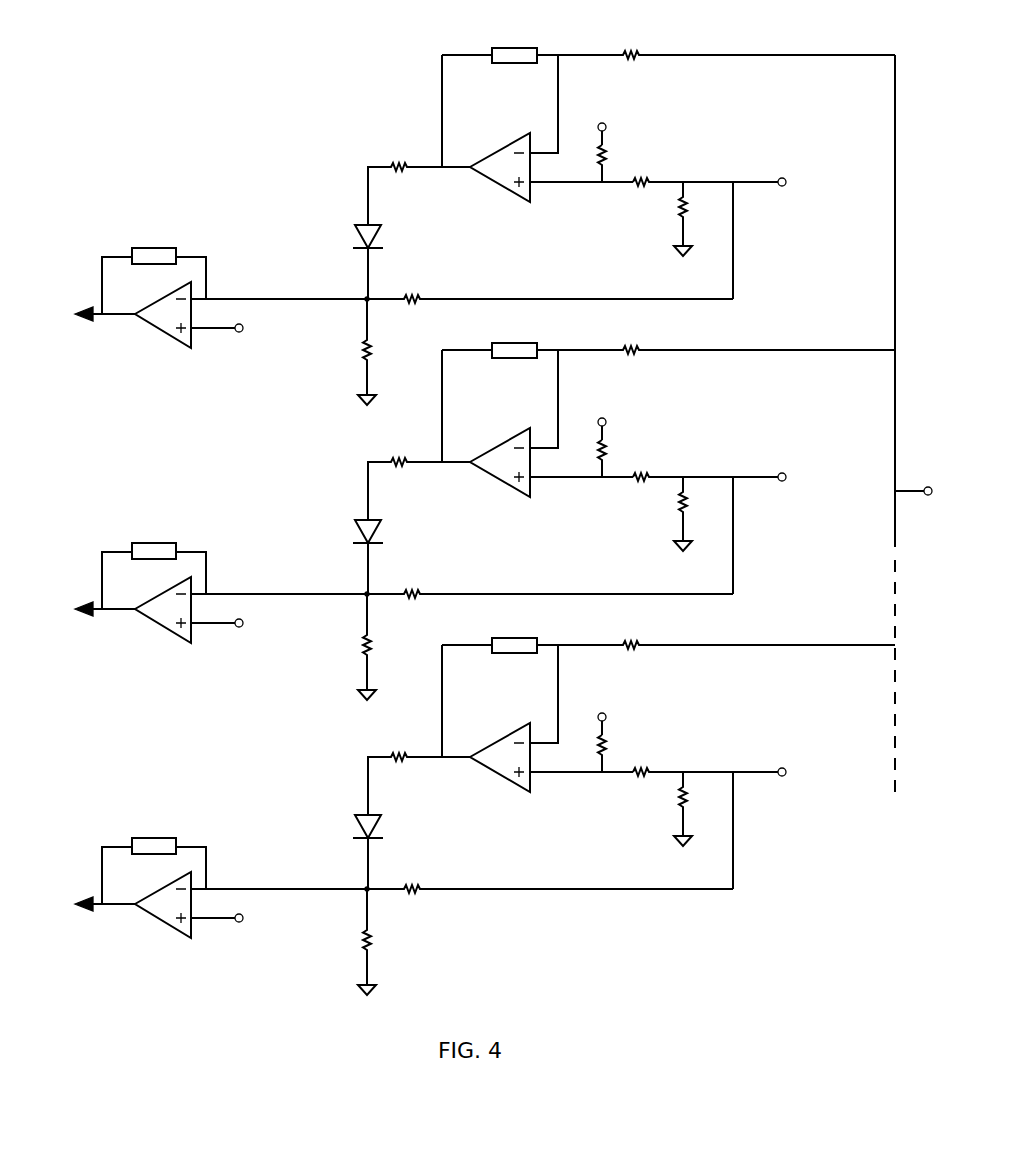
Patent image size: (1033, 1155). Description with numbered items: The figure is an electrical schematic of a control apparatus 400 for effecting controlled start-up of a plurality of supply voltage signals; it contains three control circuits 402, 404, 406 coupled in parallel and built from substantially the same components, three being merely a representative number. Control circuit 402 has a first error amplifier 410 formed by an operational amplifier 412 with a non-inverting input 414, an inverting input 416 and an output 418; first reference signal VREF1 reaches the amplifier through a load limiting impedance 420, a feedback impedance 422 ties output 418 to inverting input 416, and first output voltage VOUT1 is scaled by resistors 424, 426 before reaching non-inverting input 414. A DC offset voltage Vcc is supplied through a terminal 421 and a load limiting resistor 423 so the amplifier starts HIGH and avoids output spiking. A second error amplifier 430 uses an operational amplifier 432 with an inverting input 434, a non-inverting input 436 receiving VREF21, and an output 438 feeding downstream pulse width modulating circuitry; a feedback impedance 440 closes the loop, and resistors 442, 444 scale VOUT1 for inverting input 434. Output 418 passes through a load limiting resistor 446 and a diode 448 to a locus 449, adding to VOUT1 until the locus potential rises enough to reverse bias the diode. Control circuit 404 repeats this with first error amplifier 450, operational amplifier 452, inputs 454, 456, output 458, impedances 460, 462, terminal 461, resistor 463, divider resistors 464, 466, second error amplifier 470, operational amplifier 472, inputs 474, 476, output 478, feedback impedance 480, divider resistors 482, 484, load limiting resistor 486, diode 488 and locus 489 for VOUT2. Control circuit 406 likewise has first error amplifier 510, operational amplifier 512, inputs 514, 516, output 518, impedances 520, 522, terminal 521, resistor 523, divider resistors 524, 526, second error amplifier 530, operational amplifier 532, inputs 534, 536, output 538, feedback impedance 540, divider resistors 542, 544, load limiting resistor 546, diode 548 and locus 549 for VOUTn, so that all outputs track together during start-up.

The control apparatus 400 is at (728, 962).
The control circuit 402 is at (188, 130).
The control circuit 404 is at (182, 447).
The control circuit 406 is at (149, 746).
The first error amplifier 410 is at (415, 135).
The operational amplifier 412 is at (505, 190).
The non-inverting input 414 is at (535, 186).
The inverting input 416 is at (552, 150).
The output 418 is at (470, 162).
The load limiting impedance 420 is at (642, 50).
The terminal 421 is at (608, 127).
The feedback impedance 422 is at (515, 48).
The load limiting resistor 423 is at (610, 160).
The resistor 424 is at (657, 178).
The resistor 426 is at (678, 217).
The second error amplifier 430 is at (230, 268).
The operational amplifier 432 is at (150, 330).
The inverting input 434 is at (215, 297).
The non-inverting input 436 is at (200, 330).
The output 438 is at (80, 305).
The feedback impedance 440 is at (165, 248).
The resistor 442 is at (415, 295).
The resistor 444 is at (372, 350).
The load limiting resistor 446 is at (390, 162).
The diode 448 is at (357, 225).
The locus 449 is at (365, 296).
The first error amplifier 450 is at (408, 406).
The operational amplifier 452 is at (515, 482).
The non-inverting input 454 is at (581, 493).
The inverting input 456 is at (527, 399).
The output 458 is at (462, 436).
The load limiting impedance 460 is at (726, 327).
The terminal 461 is at (641, 416).
The feedback impedance 462 is at (510, 336).
The load limiting resistor 463 is at (637, 452).
The resistor 464 is at (743, 466).
The resistor 466 is at (648, 514).
The second error amplifier 470 is at (142, 499).
The operational amplifier 472 is at (179, 634).
The inverting input 474 is at (279, 577).
The non-inverting input 476 is at (254, 642).
The output 478 is at (91, 617).
The feedback impedance 480 is at (175, 562).
The resistor 482 is at (550, 579).
The resistor 484 is at (403, 647).
The load limiting resistor 486 is at (413, 489).
The diode 488 is at (338, 538).
The locus 489 is at (329, 576).
The first error amplifier 510 is at (423, 701).
The operational amplifier 512 is at (520, 775).
The non-inverting input 514 is at (581, 786).
The inverting input 516 is at (532, 694).
The output 518 is at (464, 732).
The load limiting impedance 520 is at (726, 629).
The terminal 521 is at (641, 711).
The feedback impedance 522 is at (510, 631).
The load limiting resistor 523 is at (637, 745).
The resistor 524 is at (743, 762).
The resistor 526 is at (649, 809).
The second error amplifier 530 is at (132, 803).
The operational amplifier 532 is at (180, 925).
The inverting input 534 is at (279, 871).
The non-inverting input 536 is at (252, 933).
The output 538 is at (101, 921).
The feedback impedance 540 is at (174, 857).
The resistor 542 is at (550, 871).
The resistor 544 is at (403, 942).
The load limiting resistor 546 is at (377, 770).
The diode 548 is at (338, 838).
The locus 549 is at (334, 872).